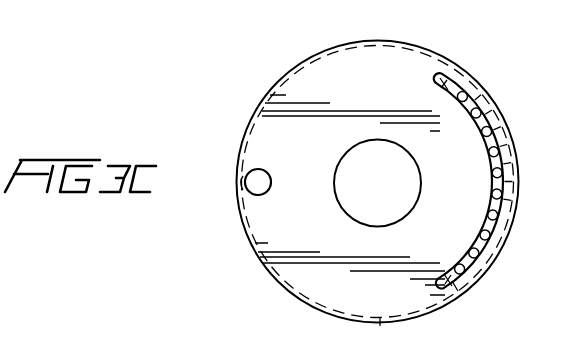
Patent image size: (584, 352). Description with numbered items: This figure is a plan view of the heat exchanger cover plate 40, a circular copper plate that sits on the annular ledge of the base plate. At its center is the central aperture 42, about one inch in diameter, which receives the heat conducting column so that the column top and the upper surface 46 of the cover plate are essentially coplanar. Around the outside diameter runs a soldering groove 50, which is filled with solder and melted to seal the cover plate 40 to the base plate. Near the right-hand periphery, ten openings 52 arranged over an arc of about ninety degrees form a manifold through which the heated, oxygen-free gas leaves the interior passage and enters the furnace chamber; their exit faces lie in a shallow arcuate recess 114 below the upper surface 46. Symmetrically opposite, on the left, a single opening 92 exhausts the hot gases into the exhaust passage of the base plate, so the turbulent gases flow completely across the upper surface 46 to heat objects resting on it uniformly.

The cover plate 40 is at (312, 67).
The upper surface of the cover plate 46 is at (373, 60).
The soldering groove 50 is at (382, 324).
The central aperture 42 is at (345, 163).
The opening 92 is at (252, 182).
The openings 52 is at (465, 99).
The recess 114 is at (456, 292).